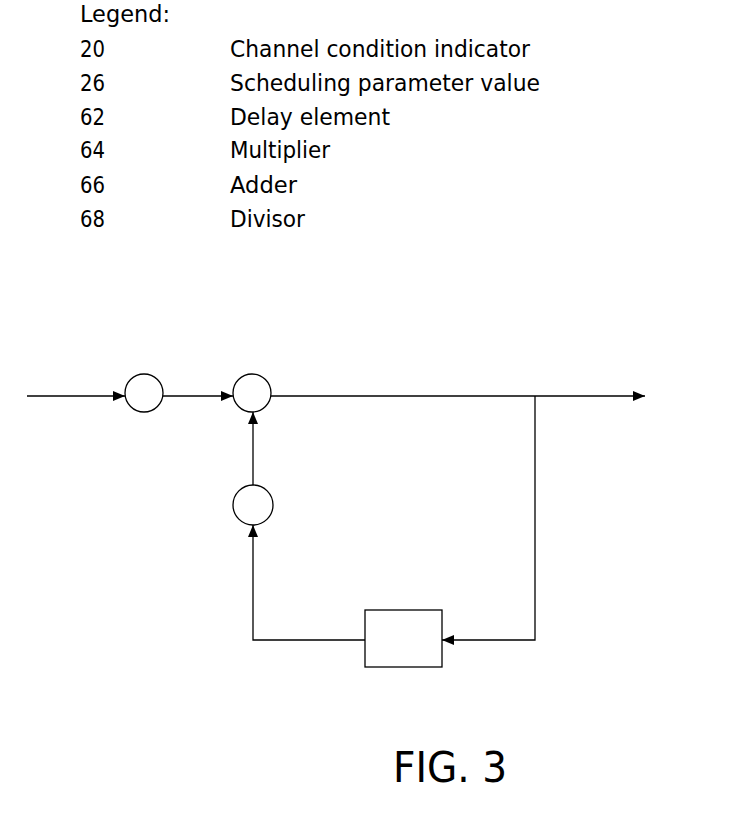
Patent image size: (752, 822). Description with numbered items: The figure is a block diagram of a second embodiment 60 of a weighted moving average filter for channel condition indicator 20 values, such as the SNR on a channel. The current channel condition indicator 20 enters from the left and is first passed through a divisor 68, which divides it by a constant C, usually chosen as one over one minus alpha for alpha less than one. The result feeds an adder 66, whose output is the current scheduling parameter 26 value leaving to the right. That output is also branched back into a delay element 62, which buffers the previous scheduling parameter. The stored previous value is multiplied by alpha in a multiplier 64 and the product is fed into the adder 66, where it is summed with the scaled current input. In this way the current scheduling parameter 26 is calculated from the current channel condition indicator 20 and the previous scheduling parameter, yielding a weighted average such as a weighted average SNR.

The channel condition indicator 20 is at (48, 396).
The scheduling parameter 26 is at (590, 396).
The second embodiment of a weighted moving average filter 60 is at (535, 322).
The delay element 62 is at (403, 610).
The multiplier 64 is at (271, 503).
The adder 66 is at (266, 378).
The divisor 68 is at (147, 374).